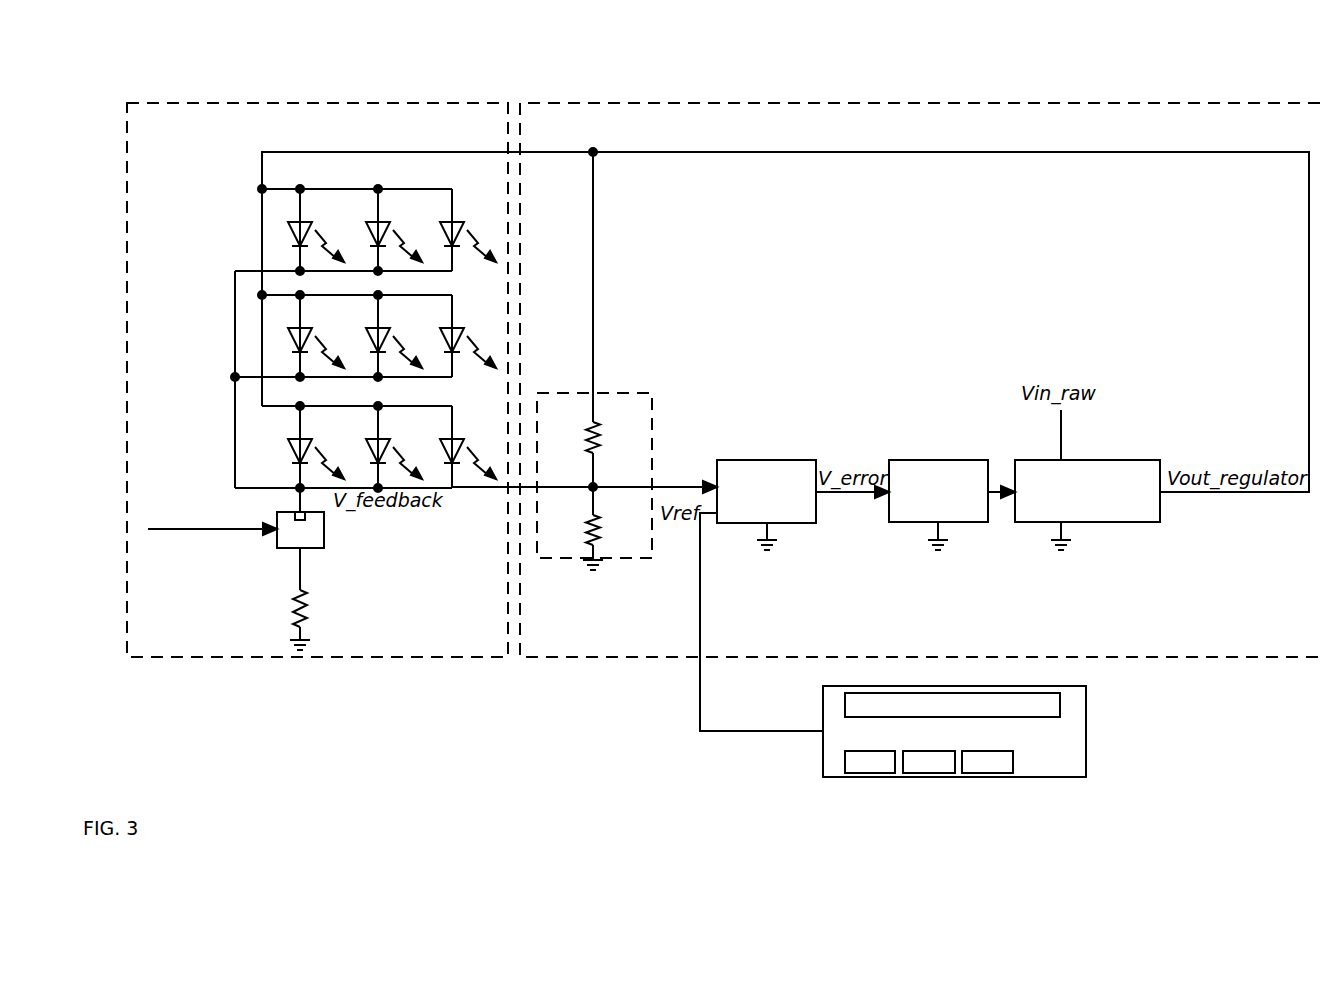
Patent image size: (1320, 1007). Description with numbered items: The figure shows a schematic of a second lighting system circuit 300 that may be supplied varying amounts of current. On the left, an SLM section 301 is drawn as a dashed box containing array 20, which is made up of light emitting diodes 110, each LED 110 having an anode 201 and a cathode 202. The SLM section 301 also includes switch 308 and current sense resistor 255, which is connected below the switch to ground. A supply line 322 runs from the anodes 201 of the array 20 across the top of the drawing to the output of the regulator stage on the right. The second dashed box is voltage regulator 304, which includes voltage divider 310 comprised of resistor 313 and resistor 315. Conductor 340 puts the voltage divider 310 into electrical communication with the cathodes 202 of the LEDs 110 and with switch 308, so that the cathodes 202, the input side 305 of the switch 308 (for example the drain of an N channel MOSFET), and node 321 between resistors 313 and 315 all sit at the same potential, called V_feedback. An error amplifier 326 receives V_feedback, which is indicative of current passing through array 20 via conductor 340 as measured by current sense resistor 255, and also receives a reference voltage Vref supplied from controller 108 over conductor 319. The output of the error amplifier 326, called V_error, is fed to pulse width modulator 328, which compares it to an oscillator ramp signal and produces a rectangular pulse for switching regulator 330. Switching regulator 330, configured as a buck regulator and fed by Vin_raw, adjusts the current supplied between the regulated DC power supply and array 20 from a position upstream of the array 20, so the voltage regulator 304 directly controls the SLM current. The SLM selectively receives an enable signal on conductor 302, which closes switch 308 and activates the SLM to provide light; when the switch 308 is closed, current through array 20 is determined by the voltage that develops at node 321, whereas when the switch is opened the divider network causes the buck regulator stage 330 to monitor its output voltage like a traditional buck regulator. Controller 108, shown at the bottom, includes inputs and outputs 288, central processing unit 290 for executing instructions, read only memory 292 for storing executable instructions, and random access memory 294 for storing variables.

The second lighting system circuit 300 is at (1172, 61).
The SLM section 301 is at (218, 103).
The voltage regulator 304 is at (813, 103).
The output supply line 322 is at (415, 152).
The array 20 is at (232, 180).
The anode 201 is at (302, 238).
The cathode 202 is at (297, 243).
The light emitting device 110 is at (332, 216).
The conductor 340 is at (493, 489).
The switch 308 is at (327, 547).
The input side 305 is at (296, 514).
The conductor 302 is at (177, 529).
The current sense resistor 255 is at (310, 607).
The voltage divider 310 is at (574, 393).
The resistor 313 is at (578, 444).
The node 321 is at (595, 486).
The resistor 315 is at (578, 537).
The error amplifier 326 is at (762, 460).
The conductor 319 is at (756, 731).
The pulse width modulator 328 is at (935, 460).
The switching regulator 330 is at (1030, 460).
The controller 108 is at (954, 731).
The inputs and outputs 288 is at (952, 705).
The central processing unit 290 is at (870, 762).
The read only memory 292 is at (929, 762).
The random access memory 294 is at (987, 762).